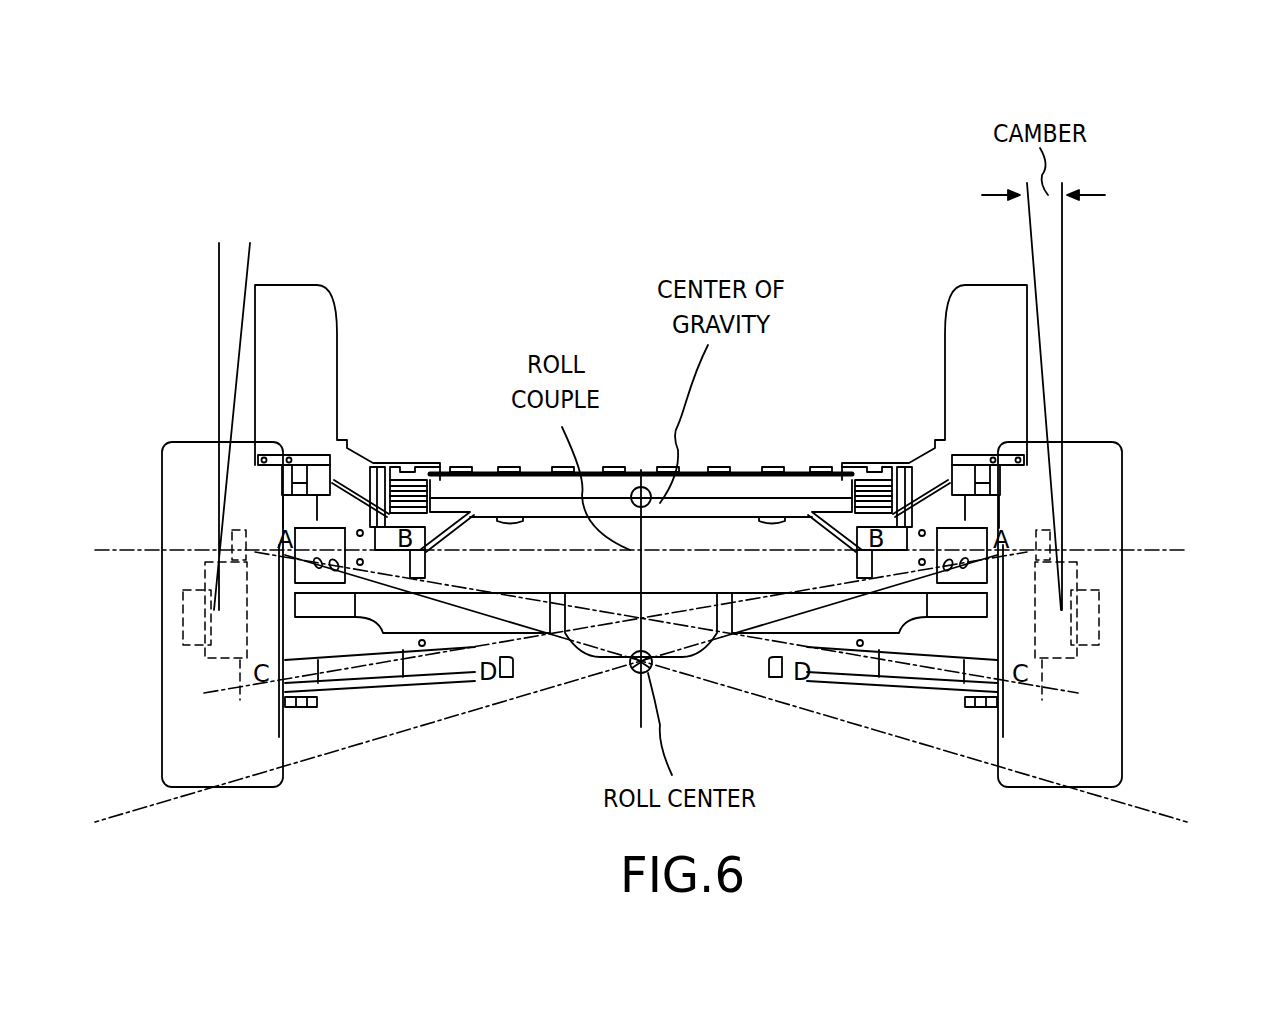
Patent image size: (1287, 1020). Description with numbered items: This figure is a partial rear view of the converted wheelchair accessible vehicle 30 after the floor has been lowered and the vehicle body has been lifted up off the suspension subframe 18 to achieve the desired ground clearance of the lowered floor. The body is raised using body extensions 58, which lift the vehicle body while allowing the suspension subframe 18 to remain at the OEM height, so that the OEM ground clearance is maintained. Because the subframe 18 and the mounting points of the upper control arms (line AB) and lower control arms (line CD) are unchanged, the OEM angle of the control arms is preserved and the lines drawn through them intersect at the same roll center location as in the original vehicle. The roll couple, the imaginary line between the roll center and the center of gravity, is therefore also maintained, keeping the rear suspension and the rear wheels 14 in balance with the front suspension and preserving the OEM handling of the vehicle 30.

The converted wheelchair accessible vehicle 30 is at (258, 140).
The body extensions 58 is at (423, 528).
The rear wheel 14 is at (1085, 705).
The suspension subframe 18 is at (820, 622).